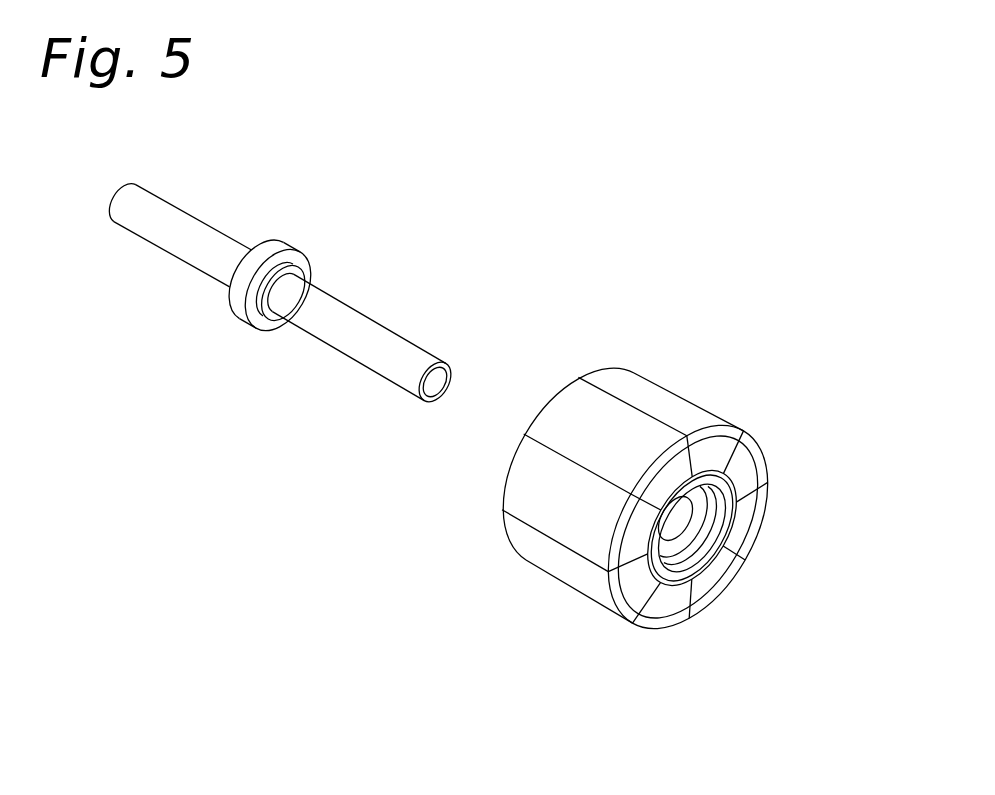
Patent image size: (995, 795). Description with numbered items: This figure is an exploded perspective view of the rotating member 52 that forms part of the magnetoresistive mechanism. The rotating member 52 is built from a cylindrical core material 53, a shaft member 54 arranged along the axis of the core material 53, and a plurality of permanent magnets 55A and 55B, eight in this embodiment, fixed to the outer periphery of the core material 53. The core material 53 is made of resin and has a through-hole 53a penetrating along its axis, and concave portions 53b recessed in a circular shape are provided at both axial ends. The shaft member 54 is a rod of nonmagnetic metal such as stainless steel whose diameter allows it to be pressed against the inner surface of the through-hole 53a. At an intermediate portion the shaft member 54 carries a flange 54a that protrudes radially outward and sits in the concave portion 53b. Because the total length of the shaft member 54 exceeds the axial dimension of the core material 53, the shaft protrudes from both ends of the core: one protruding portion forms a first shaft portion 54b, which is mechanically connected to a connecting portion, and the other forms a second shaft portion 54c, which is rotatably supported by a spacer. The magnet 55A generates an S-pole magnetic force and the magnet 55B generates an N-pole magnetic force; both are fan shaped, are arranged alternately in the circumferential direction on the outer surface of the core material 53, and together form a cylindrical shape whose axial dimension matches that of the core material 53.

The rotating member 52 is at (488, 228).
The core material 53 is at (717, 562).
The through-hole 53a is at (662, 522).
The concave portion 53b is at (700, 555).
The shaft member 54 is at (307, 313).
The flange 54a is at (273, 247).
The first shaft portion 54b is at (148, 205).
The second shaft portion 54c is at (410, 357).
The magnet 55A is at (680, 407).
The magnet 55B is at (572, 418).